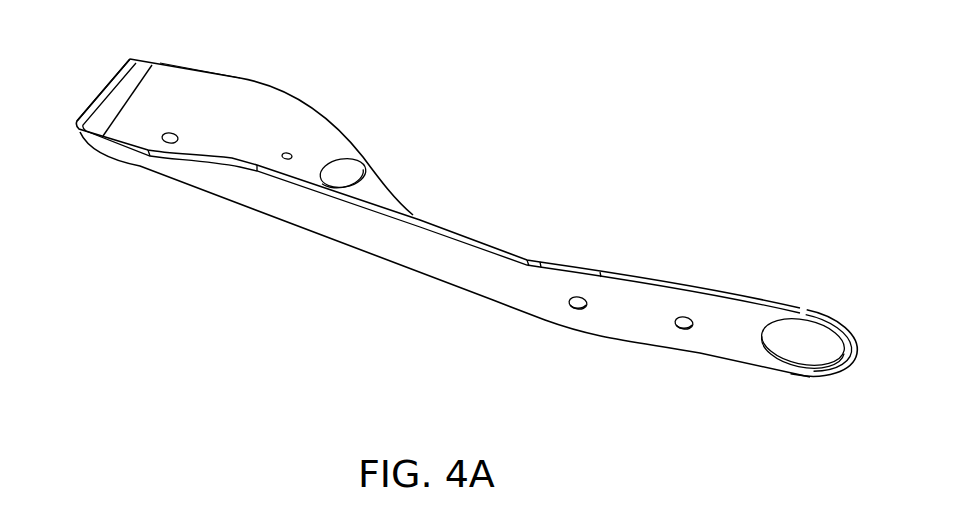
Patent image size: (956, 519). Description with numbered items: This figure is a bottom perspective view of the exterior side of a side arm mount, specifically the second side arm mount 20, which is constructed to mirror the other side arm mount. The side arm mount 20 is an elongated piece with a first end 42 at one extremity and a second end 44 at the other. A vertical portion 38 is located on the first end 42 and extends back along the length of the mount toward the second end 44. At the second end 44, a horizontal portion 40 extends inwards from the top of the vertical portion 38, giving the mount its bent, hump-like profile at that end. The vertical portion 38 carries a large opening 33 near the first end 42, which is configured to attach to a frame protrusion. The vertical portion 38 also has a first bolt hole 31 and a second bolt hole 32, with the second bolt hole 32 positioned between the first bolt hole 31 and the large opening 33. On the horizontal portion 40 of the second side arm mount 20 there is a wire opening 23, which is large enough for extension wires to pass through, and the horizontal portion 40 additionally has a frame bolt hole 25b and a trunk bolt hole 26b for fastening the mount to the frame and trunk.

The second side arm mount 20 is at (462, 233).
The wire opening 23 is at (350, 158).
The frame bolt hole 25b is at (287, 152).
The trunk bolt hole 26b is at (170, 132).
The first bolt hole 31 is at (578, 309).
The second bolt hole 32 is at (684, 329).
The large opening 33 is at (805, 364).
The vertical portion 38 is at (547, 280).
The horizontal portion 40 is at (238, 100).
The first end 42 is at (855, 327).
The second end 44 is at (90, 105).